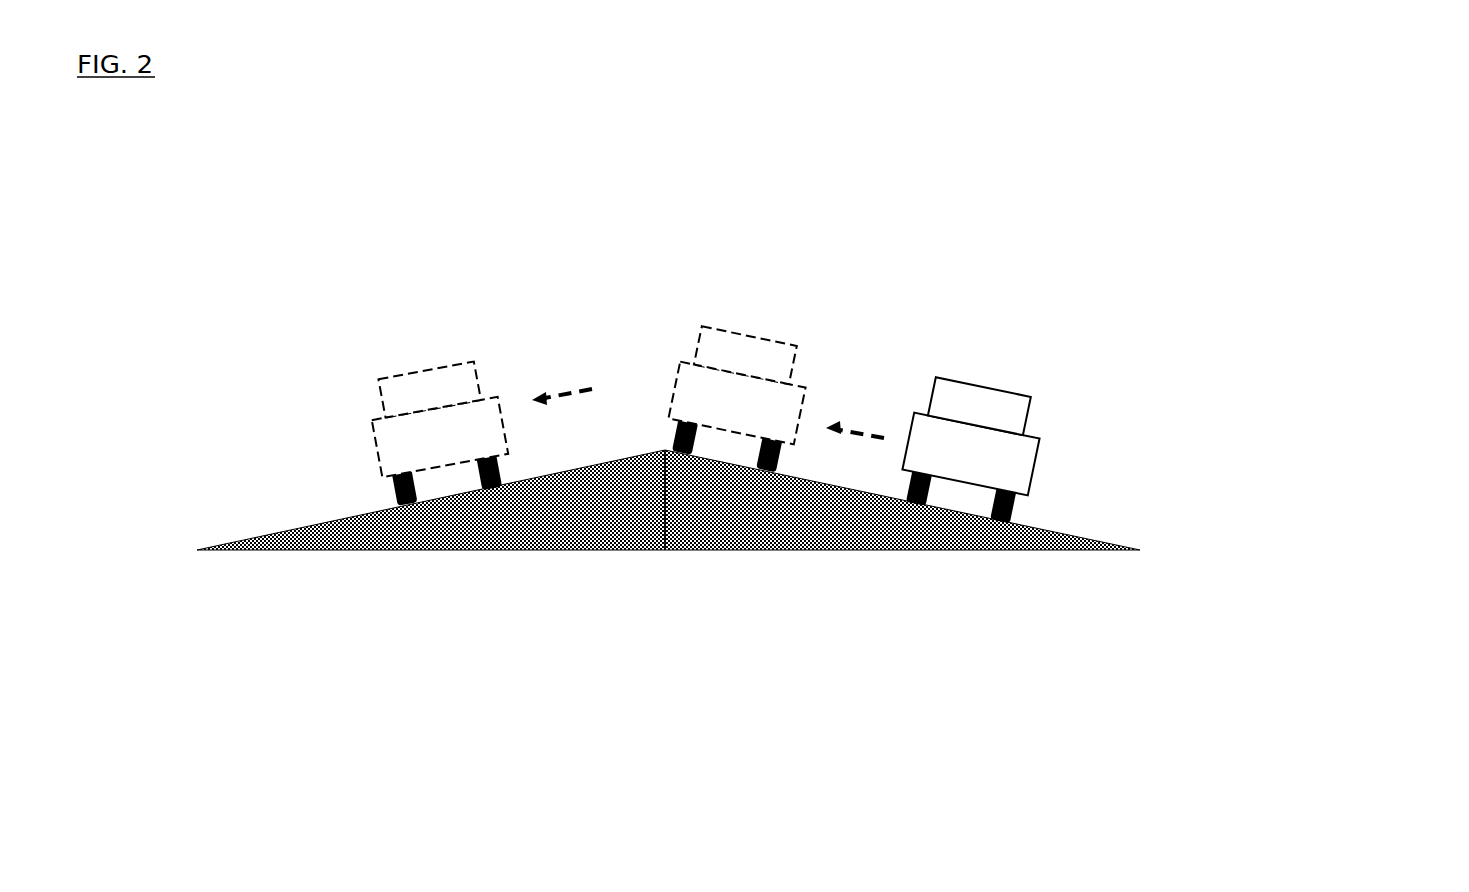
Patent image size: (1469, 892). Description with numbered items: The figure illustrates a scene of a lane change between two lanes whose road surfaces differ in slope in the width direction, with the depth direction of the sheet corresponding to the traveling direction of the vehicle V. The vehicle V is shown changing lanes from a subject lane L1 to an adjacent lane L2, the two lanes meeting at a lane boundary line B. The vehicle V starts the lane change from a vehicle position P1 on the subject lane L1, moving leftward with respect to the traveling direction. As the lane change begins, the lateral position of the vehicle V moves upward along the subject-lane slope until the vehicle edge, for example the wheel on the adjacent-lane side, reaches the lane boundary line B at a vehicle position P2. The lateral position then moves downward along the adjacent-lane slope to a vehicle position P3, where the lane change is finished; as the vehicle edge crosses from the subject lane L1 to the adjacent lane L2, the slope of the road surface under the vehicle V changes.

The lane boundary line B is at (664, 436).
The vehicle position P1 is at (1022, 303).
The vehicle position P2 is at (787, 267).
The vehicle position P3 is at (460, 297).
The subject lane L1 is at (1085, 517).
The adjacent lane L2 is at (276, 516).
The vehicle V is at (1039, 500).